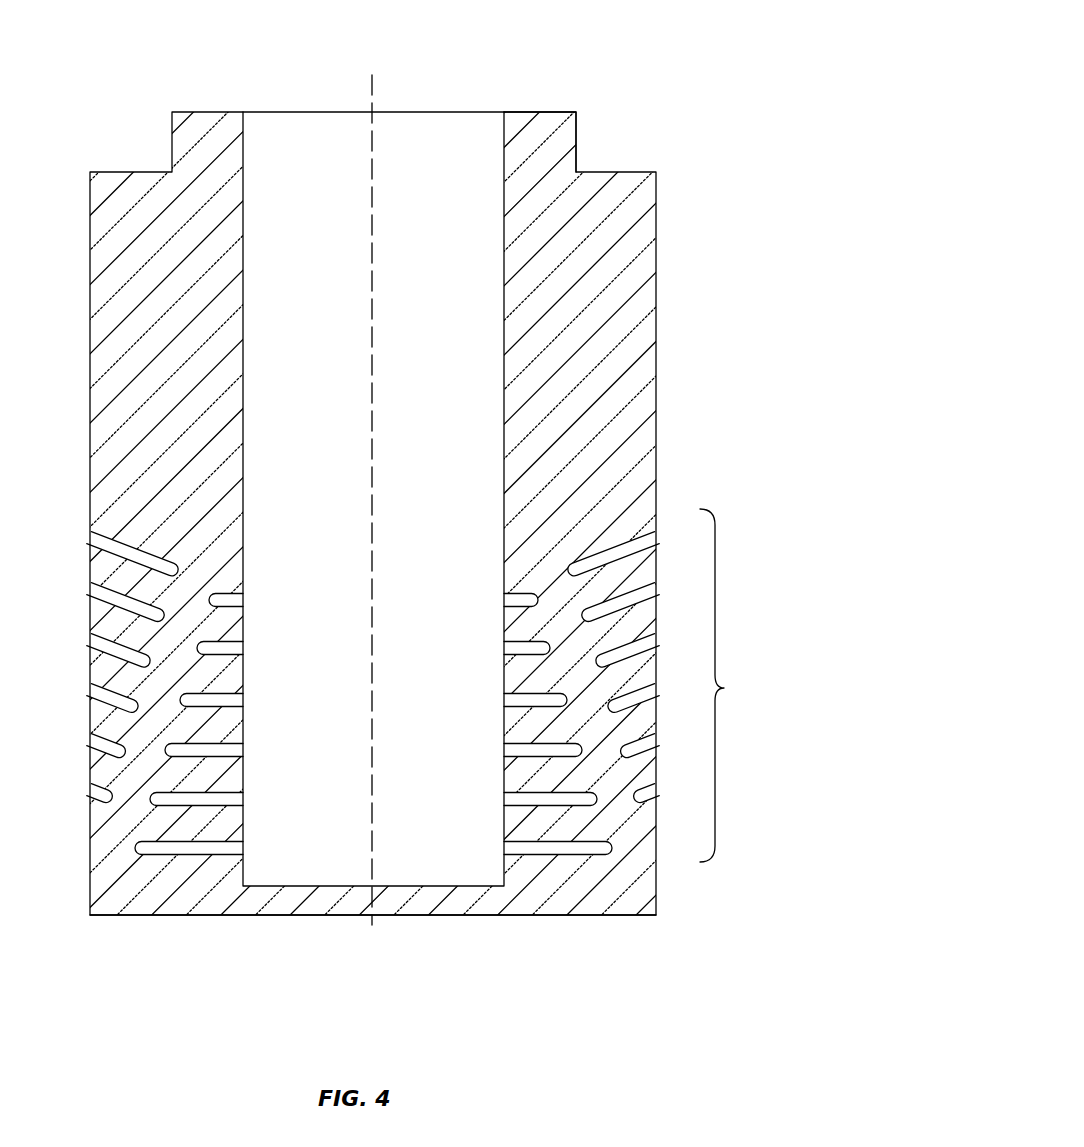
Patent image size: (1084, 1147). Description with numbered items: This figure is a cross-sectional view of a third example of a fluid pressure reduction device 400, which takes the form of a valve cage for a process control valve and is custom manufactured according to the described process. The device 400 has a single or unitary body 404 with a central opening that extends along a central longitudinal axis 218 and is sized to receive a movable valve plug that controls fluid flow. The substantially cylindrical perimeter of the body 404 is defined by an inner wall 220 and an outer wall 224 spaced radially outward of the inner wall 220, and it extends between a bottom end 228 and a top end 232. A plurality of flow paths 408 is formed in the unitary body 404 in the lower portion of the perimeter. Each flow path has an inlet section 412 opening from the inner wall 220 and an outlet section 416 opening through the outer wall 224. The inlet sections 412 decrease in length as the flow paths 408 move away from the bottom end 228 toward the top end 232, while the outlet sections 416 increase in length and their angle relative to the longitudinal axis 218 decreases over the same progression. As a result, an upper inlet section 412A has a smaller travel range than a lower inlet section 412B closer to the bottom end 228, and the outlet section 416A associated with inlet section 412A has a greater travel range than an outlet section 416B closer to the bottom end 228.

The fluid pressure reduction device 400 is at (670, 40).
The unitary body 404 is at (672, 256).
The central longitudinal axis 218 is at (373, 100).
The top end 232 is at (550, 112).
The inner wall 220 is at (505, 332).
The outer wall 224 is at (656, 364).
The bottom end 228 is at (580, 916).
The plurality of flow paths 408 is at (741, 685).
The inlet sections 412 is at (366, 724).
The inlet section 412A is at (503, 597).
The inlet section 412B is at (511, 855).
The outlet sections 416 is at (414, 616).
The outlet section 416A is at (609, 548).
The outlet section 416B is at (637, 803).